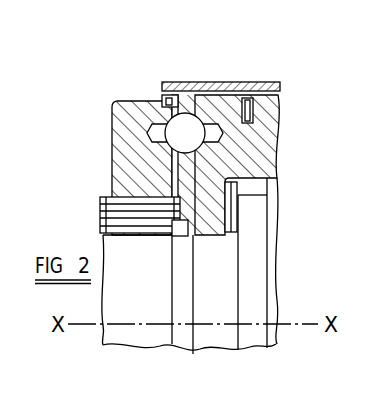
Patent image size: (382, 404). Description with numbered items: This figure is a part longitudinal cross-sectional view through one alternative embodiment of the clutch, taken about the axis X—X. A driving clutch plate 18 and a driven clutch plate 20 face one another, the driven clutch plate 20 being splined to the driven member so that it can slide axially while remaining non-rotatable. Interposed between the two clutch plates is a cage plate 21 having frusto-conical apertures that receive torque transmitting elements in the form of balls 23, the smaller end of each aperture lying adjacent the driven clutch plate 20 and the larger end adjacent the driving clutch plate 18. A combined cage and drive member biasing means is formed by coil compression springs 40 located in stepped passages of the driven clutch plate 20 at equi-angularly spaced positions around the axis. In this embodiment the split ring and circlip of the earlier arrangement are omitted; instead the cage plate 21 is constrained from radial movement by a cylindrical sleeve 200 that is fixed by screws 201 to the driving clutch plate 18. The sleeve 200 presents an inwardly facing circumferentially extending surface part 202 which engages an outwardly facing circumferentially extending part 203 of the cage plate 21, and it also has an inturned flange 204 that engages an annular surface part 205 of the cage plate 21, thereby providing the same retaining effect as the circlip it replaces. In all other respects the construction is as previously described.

The driving clutch plate 18 is at (262, 152).
The driven clutch plate 20 is at (114, 101).
The cage plate 21 is at (216, 105).
The balls 23 is at (208, 228).
The coil compression springs 40 is at (130, 197).
The cylindrical sleeve 200 is at (281, 84).
The screws 201 is at (253, 102).
The inwardly facing circumferentially extending surface part 202 is at (174, 95).
The outwardly facing circumferentially extending part 203 is at (207, 97).
The inturned flange 204 is at (164, 94).
The annular surface part 205 is at (188, 95).